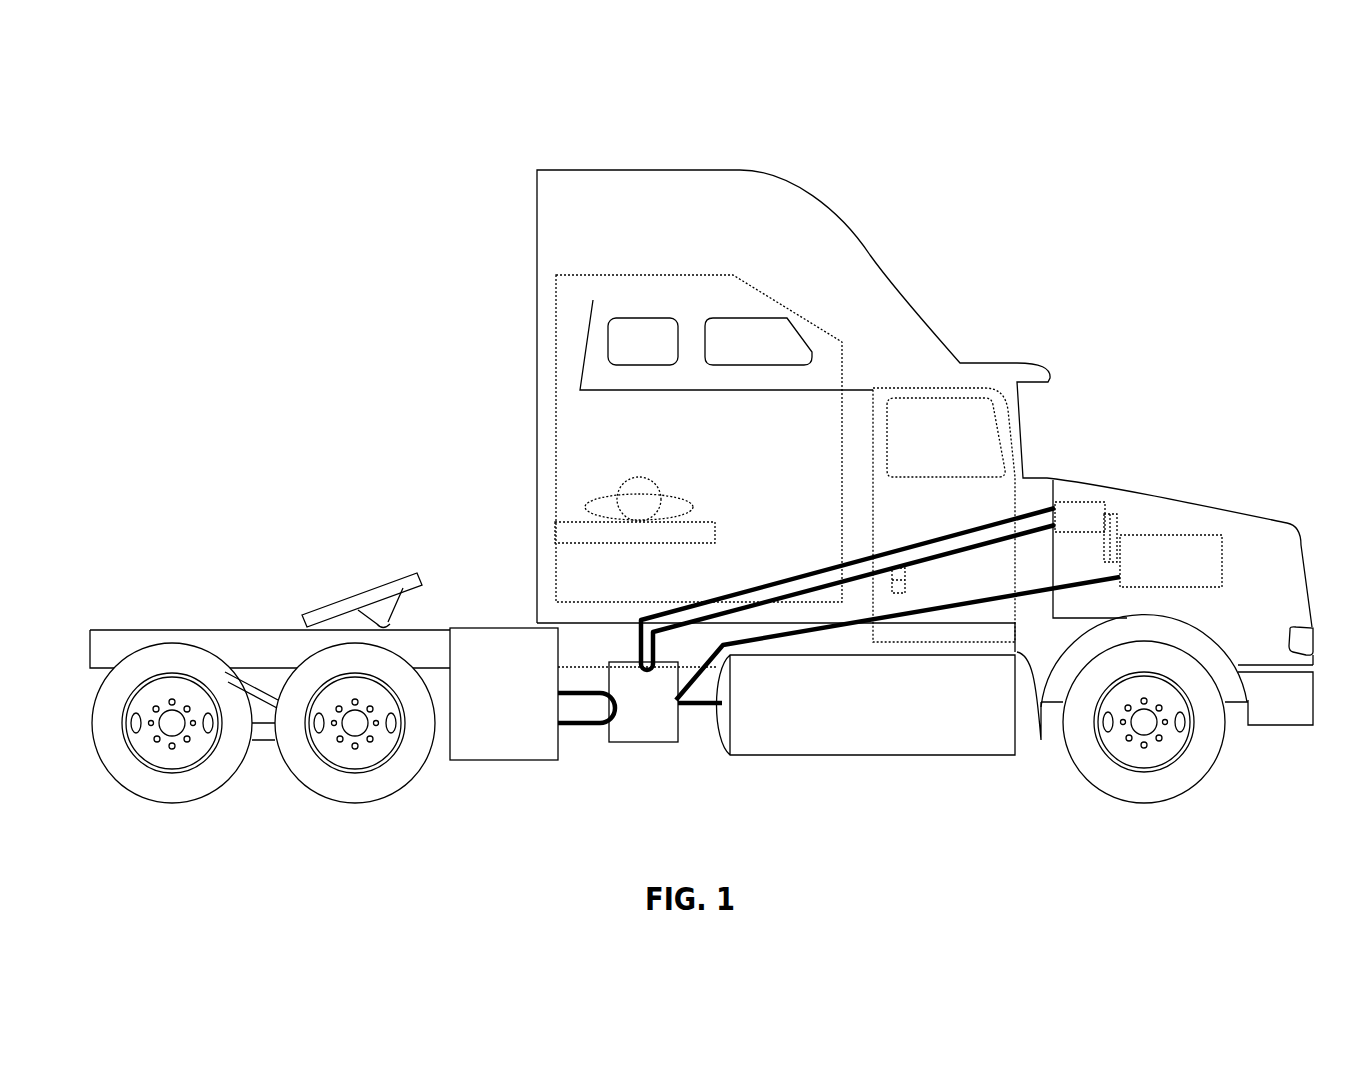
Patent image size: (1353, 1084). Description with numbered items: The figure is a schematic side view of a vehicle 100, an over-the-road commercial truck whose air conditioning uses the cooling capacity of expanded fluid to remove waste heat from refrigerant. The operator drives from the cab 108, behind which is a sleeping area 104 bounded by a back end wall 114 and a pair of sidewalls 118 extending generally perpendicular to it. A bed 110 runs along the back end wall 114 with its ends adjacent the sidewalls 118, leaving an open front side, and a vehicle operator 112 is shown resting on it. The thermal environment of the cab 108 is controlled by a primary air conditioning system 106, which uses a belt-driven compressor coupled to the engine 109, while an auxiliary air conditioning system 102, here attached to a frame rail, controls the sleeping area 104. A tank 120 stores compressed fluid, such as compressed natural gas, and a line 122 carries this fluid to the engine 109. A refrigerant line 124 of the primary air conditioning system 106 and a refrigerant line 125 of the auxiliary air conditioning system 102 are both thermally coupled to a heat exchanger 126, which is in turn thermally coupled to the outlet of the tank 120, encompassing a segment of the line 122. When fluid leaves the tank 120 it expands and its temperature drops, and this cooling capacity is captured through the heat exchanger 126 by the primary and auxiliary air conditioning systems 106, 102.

The vehicle 100 is at (1198, 124).
The auxiliary air conditioning system 102 is at (519, 669).
The sleeping area 104 is at (801, 511).
The primary air conditioning system 106 is at (1067, 513).
The cab 108 is at (909, 430).
The engine 109 is at (1191, 569).
The bed 110 is at (600, 530).
The vehicle operator 112 is at (607, 498).
The back end wall 114 is at (537, 415).
The sidewalls 118 is at (721, 308).
The tank 120 is at (953, 702).
The line 122 is at (692, 710).
The refrigerant line 124 is at (640, 617).
The refrigerant line 125 is at (587, 732).
The heat exchanger 126 is at (663, 716).